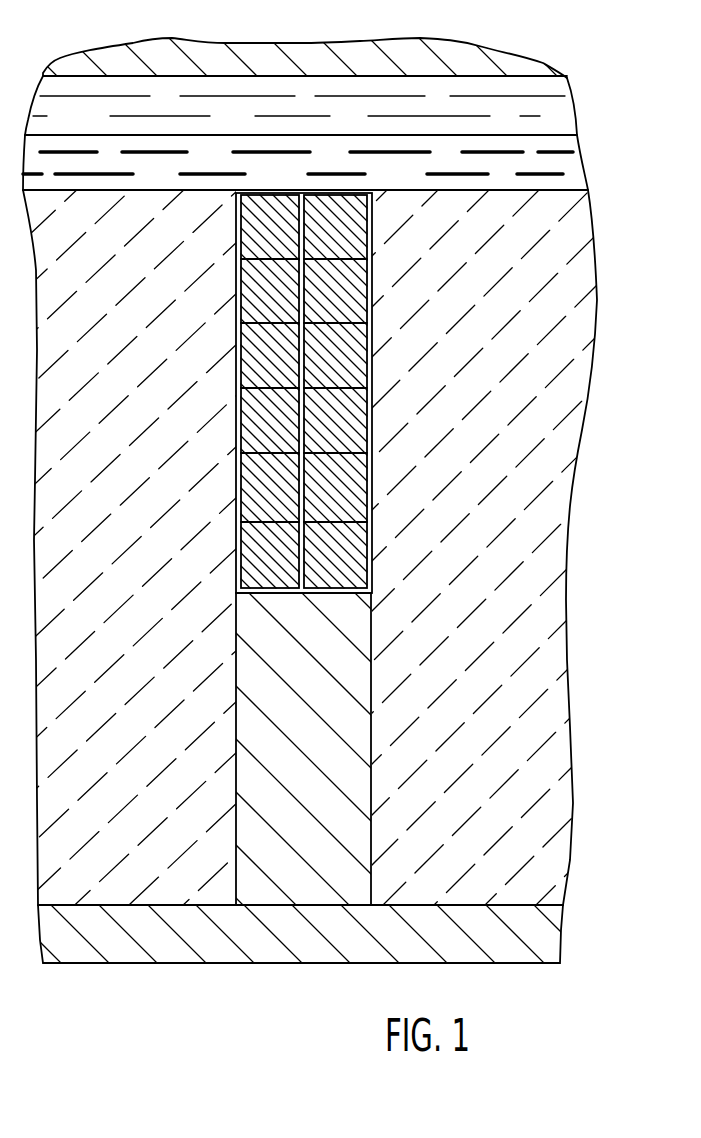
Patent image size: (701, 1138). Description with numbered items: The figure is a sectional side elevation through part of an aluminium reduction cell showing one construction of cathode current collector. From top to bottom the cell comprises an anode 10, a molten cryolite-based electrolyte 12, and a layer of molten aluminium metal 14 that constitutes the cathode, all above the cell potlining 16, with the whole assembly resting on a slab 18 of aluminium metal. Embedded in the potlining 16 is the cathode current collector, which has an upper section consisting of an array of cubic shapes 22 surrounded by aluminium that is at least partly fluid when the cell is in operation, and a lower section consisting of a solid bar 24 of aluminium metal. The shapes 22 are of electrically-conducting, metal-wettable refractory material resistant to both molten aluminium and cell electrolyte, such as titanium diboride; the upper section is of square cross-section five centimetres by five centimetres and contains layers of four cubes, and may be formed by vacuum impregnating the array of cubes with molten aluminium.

The anode 10 is at (452, 62).
The molten cryolite-based electrolyte 12 is at (557, 115).
The layer of molten aluminium metal 14 is at (557, 175).
The cell potlining 16 is at (570, 355).
The slab of aluminium metal 18 is at (298, 953).
The cubic shapes 22 is at (258, 308).
The solid bar of aluminium metal 24 is at (312, 741).